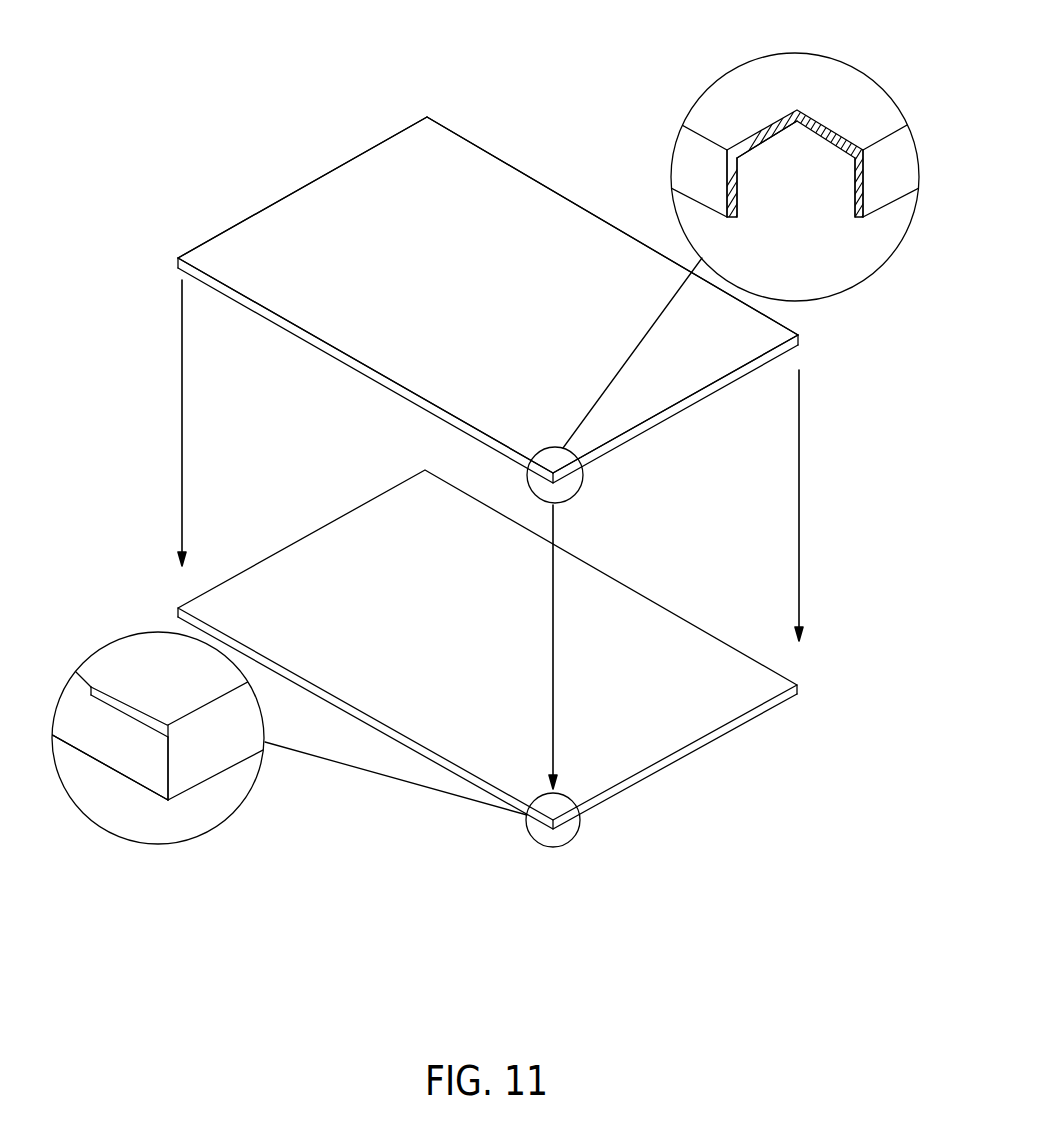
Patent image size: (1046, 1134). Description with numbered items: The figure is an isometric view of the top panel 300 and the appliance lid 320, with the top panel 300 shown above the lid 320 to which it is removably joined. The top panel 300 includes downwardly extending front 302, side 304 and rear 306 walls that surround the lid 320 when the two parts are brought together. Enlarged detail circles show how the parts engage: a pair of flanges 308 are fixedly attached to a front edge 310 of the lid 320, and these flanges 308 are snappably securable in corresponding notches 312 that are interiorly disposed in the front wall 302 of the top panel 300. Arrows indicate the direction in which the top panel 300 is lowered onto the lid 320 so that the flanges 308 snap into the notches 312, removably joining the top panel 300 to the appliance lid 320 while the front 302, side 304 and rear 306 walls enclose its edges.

The top panel 300 is at (457, 289).
The front wall 302 is at (257, 307).
The side wall 304 is at (280, 197).
The rear wall 306 is at (495, 157).
The flange 308 is at (146, 718).
The front edge 310 is at (132, 762).
The notch 312 is at (737, 160).
The appliance lid 320 is at (680, 615).